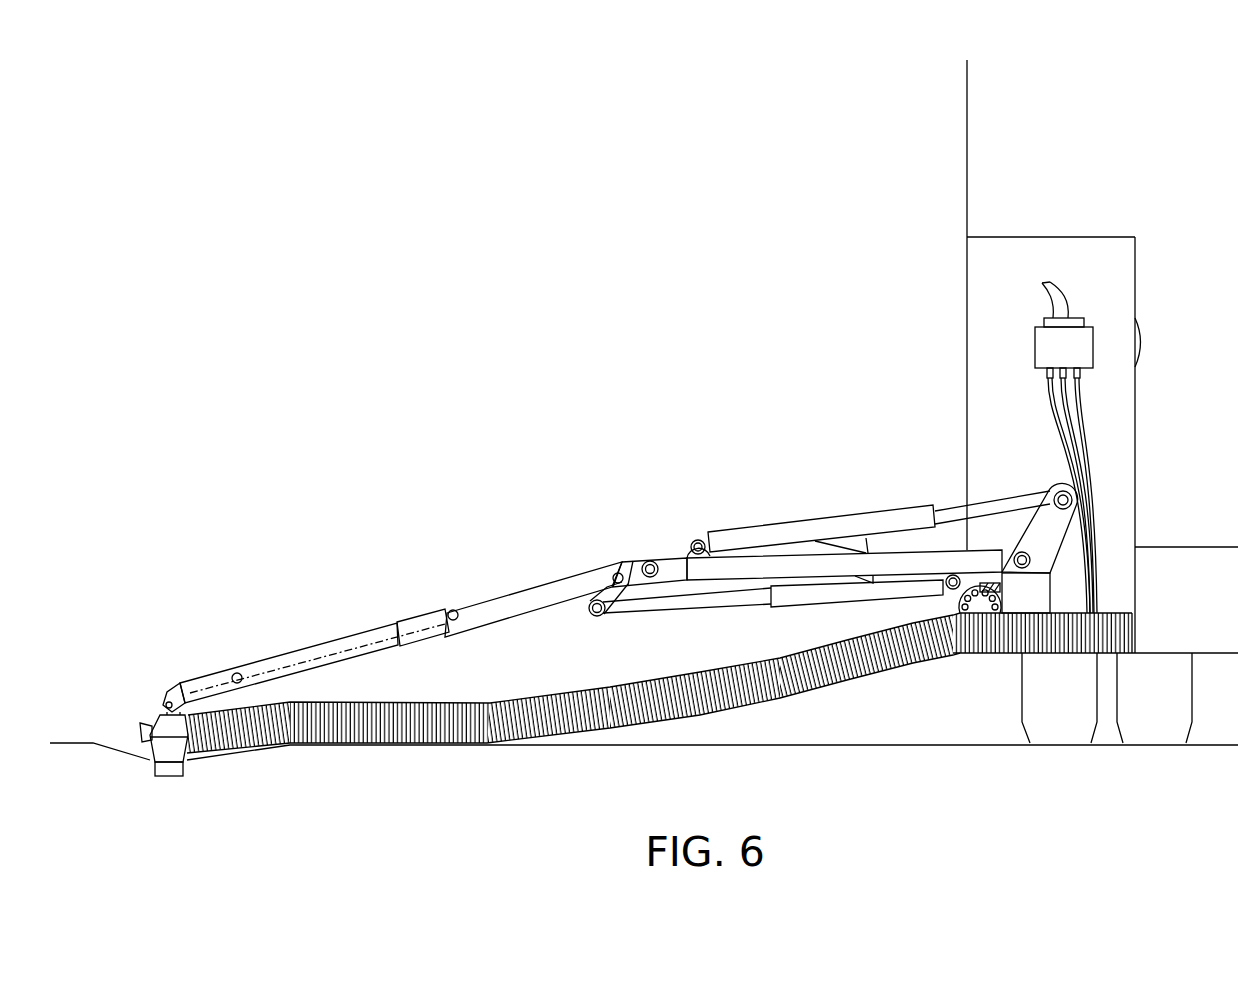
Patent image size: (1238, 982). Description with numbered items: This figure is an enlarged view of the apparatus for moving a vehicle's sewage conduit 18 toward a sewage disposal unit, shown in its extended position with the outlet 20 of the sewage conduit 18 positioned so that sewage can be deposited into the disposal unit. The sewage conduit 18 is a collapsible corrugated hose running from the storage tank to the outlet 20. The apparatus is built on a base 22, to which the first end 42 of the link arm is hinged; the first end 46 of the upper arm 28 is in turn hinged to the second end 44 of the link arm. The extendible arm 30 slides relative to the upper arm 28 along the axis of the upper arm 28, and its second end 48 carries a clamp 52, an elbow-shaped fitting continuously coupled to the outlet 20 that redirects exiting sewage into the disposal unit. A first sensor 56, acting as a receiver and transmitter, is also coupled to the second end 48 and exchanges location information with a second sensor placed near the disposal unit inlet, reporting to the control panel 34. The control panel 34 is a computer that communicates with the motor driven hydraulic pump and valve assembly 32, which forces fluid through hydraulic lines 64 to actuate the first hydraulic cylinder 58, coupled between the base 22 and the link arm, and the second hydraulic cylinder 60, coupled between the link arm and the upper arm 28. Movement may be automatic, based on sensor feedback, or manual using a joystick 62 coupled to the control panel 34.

The sewage conduit 18 is at (405, 735).
The outlet 20 is at (171, 778).
The base 22 is at (1027, 590).
The upper arm 28 is at (735, 560).
The extendible arm 30 is at (212, 681).
The motor driven hydraulic pump and valve assembly 32 is at (980, 610).
The control panel 34 is at (1075, 360).
The first end of the link arm 42 is at (992, 560).
The second end of the link arm 44 is at (681, 562).
The first end of the upper arm 46 is at (647, 560).
The second end of the extendible arm 48 is at (176, 698).
The clamp 52 is at (185, 740).
The first sensor 56 is at (141, 730).
The first hydraulic cylinder 58 is at (842, 527).
The second hydraulic cylinder 60 is at (823, 596).
The joystick 62 is at (1062, 295).
The hydraulic lines 64 is at (1082, 412).